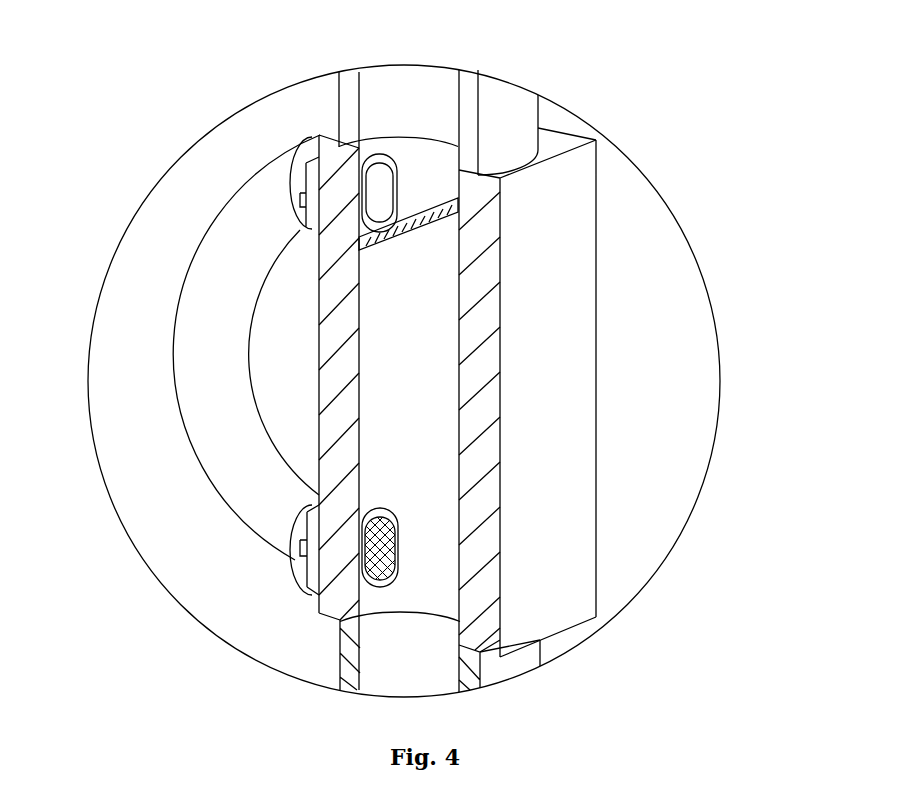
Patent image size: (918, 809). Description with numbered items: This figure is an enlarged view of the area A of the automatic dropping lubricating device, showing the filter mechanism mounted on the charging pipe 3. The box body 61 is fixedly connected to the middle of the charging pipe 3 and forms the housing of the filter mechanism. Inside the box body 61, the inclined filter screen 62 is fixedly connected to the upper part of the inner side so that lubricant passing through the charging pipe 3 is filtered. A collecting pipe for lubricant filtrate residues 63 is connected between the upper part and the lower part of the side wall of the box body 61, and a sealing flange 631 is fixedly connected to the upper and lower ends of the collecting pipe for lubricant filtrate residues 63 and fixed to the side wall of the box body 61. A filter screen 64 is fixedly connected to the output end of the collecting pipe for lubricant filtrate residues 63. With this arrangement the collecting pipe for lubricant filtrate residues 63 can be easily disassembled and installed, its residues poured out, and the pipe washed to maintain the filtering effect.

The charging pipe 3 is at (503, 128).
The box body 61 is at (557, 333).
The inclined filter screen 62 is at (392, 226).
The collecting pipe for lubricant filtrate residues 63 is at (212, 398).
The sealing flange 631 is at (297, 558).
The filter screen 64 is at (397, 537).
The area A is at (647, 179).